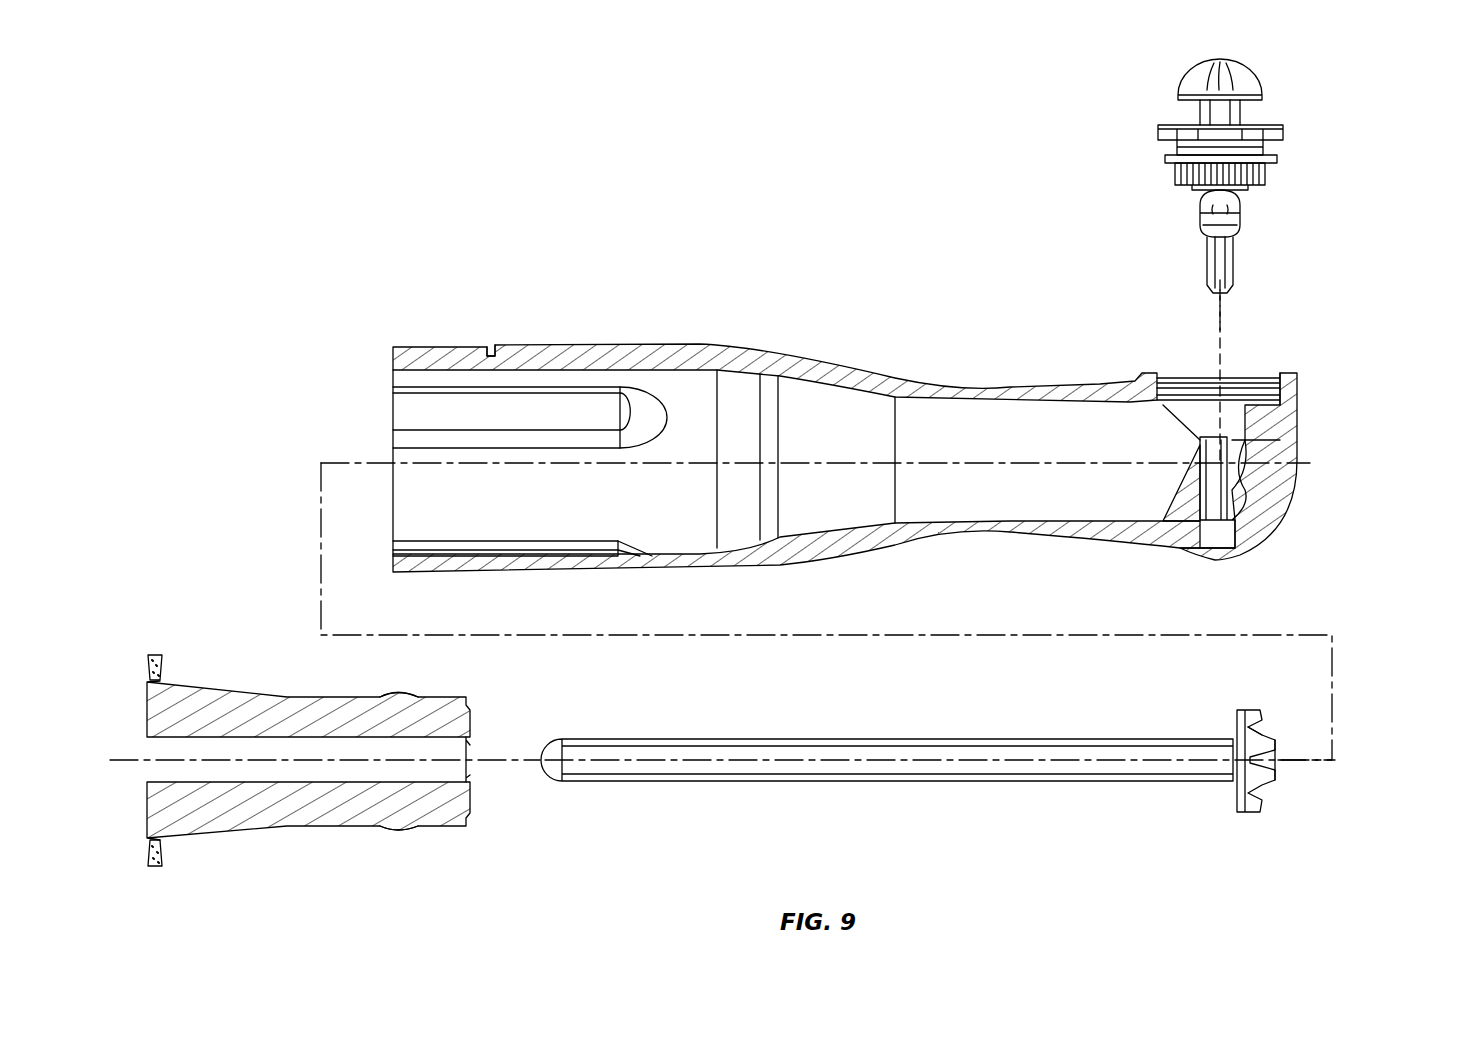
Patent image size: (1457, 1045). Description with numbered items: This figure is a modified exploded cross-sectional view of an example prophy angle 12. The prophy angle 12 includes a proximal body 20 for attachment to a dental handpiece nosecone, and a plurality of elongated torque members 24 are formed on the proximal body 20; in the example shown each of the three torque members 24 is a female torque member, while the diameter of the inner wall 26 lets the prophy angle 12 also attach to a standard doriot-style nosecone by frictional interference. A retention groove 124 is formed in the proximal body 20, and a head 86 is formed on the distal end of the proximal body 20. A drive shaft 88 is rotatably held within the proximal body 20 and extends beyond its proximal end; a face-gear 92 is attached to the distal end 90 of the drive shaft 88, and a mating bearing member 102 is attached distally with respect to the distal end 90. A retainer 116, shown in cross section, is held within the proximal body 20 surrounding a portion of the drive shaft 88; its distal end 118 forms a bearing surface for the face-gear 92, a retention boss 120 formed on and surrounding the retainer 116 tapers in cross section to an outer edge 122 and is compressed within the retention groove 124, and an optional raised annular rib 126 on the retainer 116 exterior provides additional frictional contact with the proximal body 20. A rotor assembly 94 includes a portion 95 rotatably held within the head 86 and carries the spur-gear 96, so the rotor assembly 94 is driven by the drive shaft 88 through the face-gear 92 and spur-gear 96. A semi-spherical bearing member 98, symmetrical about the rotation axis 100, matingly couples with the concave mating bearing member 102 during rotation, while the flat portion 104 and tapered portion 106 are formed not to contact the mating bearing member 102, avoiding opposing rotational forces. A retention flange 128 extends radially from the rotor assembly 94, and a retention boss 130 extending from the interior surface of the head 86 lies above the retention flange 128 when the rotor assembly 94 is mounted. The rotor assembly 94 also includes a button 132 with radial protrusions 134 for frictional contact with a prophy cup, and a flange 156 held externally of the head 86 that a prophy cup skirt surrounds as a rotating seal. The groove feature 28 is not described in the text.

The prophy angle 12 is at (834, 449).
The proximal body 20 is at (803, 568).
The elongated torque members 24 is at (418, 400).
The inner wall 26 is at (672, 385).
The groove 28 is at (468, 347).
The head 86 is at (1262, 548).
The drive shaft 88 is at (1015, 736).
The distal end of drive shaft 90 is at (970, 761).
The face-gear 92 is at (1318, 768).
The rotor assembly 94 is at (1233, 186).
The portion of rotor assembly held within head 95 is at (1255, 232).
The spur-gear 96 is at (1266, 176).
The bearing member 98 is at (1241, 205).
The rotation axis 100 is at (1297, 305).
The mating bearing member 102 is at (1272, 740).
The flat portion 104 is at (1203, 218).
The tapered portion 106 is at (1237, 235).
The retainer 116 is at (336, 744).
The distal end of retainer 118 is at (471, 710).
The retention boss 120 is at (166, 852).
The outer edge 122 is at (155, 655).
The retention groove 124 is at (770, 375).
The raised annular rib 126 is at (396, 690).
The retention flange 128 is at (1165, 158).
The retention boss 130 is at (1263, 400).
The button 132 is at (1262, 92).
The radial protrusions 134 is at (1192, 80).
The flange 156 is at (1160, 125).